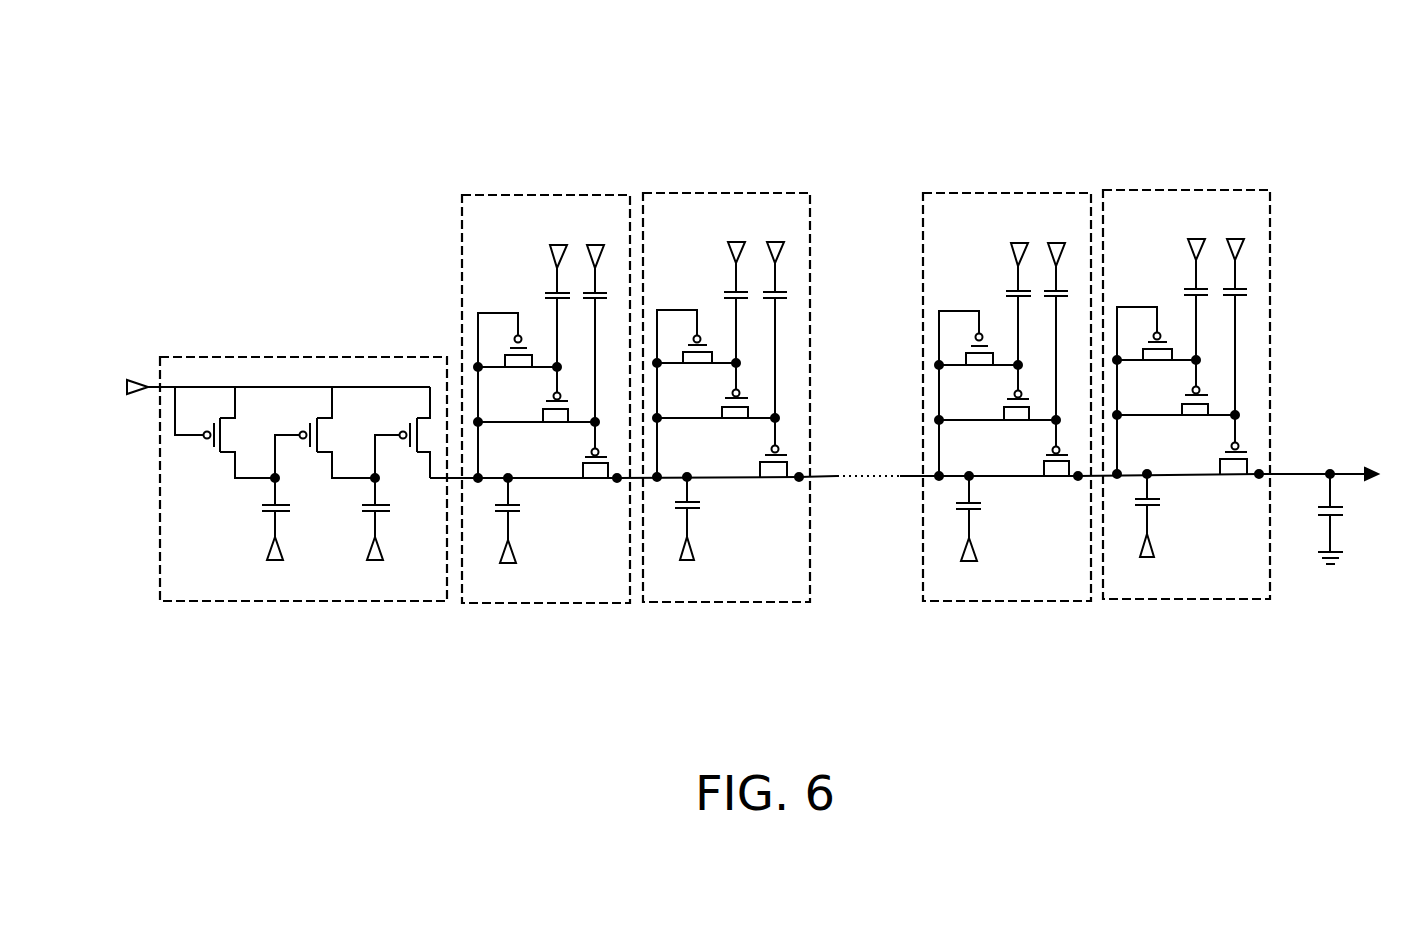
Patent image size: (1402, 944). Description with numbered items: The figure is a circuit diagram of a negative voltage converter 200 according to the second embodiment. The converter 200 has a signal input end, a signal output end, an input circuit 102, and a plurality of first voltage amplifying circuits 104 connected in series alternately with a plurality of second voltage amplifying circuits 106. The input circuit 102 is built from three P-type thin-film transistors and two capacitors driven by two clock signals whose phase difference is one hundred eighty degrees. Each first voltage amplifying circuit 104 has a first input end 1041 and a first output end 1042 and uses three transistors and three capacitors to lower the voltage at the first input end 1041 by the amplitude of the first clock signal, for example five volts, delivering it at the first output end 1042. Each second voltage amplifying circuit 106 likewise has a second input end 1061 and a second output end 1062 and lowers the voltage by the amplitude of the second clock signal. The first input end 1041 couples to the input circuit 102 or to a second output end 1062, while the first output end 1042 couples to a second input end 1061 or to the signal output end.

The negative voltage converter 200 is at (803, 60).
The input circuit 102 is at (305, 357).
The first voltage amplifying circuit 104 is at (546, 195).
The second voltage amplifying circuit 106 is at (726, 193).
The first input end 1041 is at (478, 478).
The first output end 1042 is at (617, 478).
The second input end 1061 is at (657, 477).
The second output end 1062 is at (799, 477).